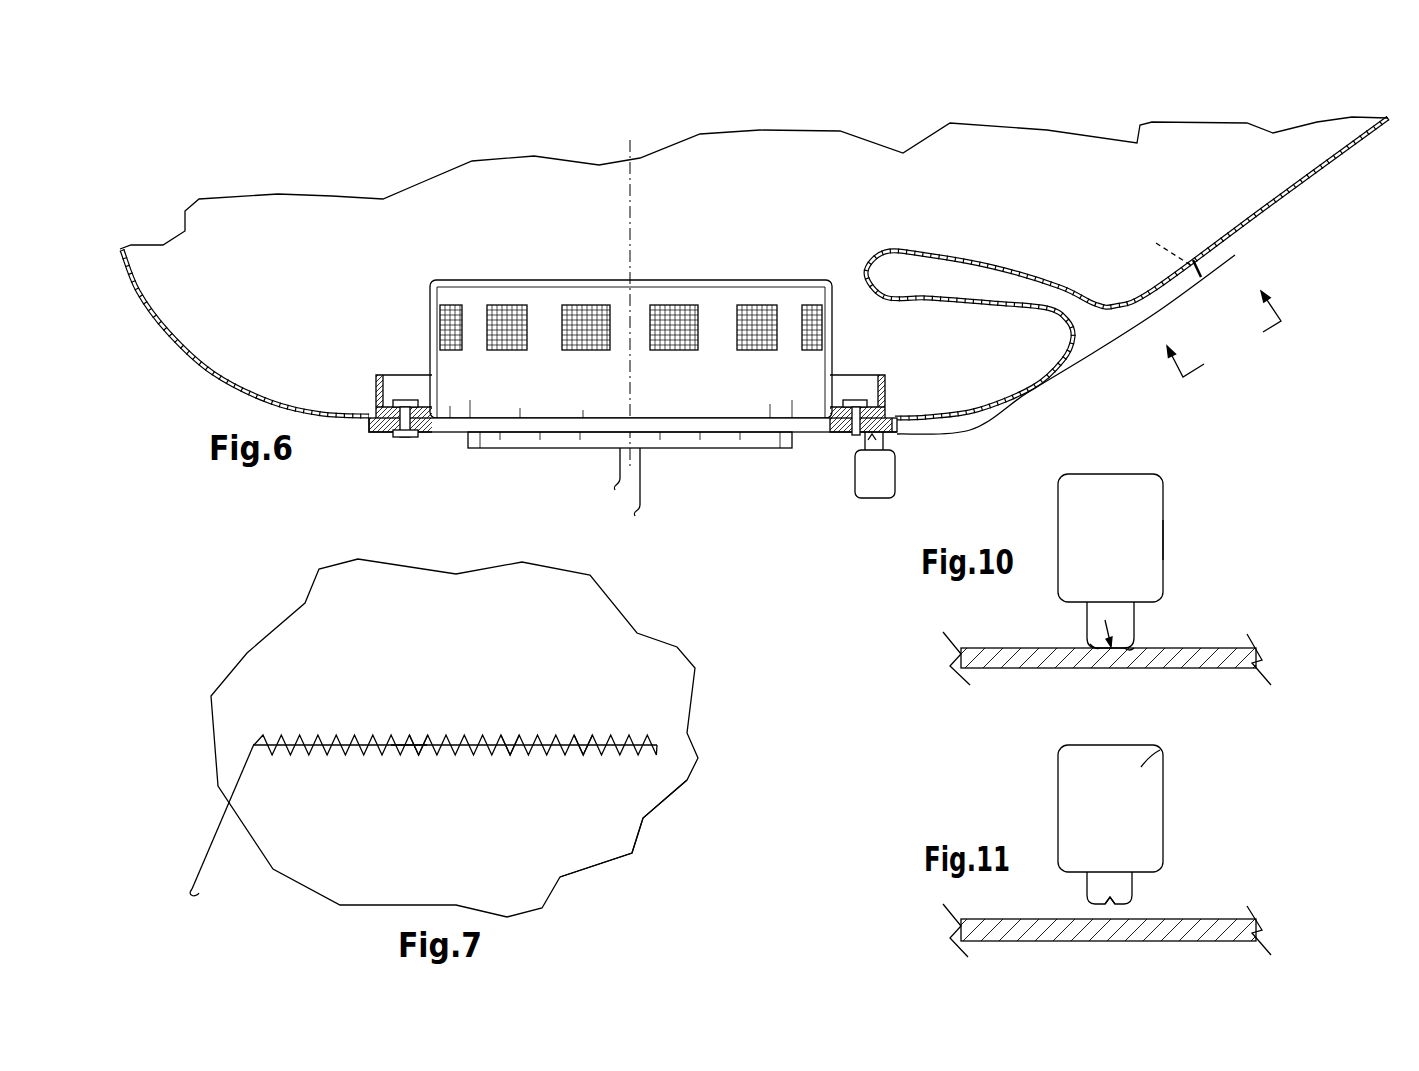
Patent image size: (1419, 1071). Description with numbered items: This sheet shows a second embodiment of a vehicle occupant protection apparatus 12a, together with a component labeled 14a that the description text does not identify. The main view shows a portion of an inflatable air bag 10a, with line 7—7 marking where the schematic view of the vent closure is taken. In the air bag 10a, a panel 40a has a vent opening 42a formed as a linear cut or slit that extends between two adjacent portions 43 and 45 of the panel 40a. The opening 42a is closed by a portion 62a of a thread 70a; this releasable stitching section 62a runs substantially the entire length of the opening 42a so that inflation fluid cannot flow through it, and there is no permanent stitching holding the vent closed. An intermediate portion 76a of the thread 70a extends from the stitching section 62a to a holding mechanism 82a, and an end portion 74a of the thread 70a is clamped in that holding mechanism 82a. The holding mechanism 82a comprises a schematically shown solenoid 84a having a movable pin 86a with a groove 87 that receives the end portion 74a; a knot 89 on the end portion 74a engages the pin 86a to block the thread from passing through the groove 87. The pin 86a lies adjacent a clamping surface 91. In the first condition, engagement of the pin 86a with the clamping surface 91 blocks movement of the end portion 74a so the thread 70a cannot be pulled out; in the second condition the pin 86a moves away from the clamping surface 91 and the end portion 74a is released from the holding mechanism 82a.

In FIG. 6, the air bag 10a is at (416, 185).
In FIG. 7, the air bag 10a is at (638, 837).
In FIG. 6, the vehicle occupant protection apparatus 12a is at (503, 143).
In FIG. 7, the vehicle occupant protection apparatus 12a is at (307, 899).
In FIG. 10, the vehicle occupant protection apparatus 12a is at (929, 638).
In FIG. 11, the vehicle occupant protection apparatus 12a is at (929, 902).
In FIG. 6, the inflator 14a is at (554, 281).
In FIG. 6, the panel 40a is at (983, 257).
In FIG. 7, the panel 40a is at (545, 843).
In FIG. 6, the vent opening 42a is at (1153, 246).
In FIG. 7, the vent opening 42a is at (364, 740).
In FIG. 7, the adjacent portion of the panel 43 is at (420, 728).
In FIG. 7, the adjacent portion of the panel 45 is at (406, 762).
In FIG. 6, the releasable stitching section 62a is at (1197, 266).
In FIG. 7, the releasable stitching section 62a is at (577, 735).
In FIG. 6, the thread 70a is at (1043, 396).
In FIG. 7, the thread 70a is at (203, 860).
In FIG. 10, the thread 70a is at (1114, 627).
In FIG. 6, the end portion of the thread 74a is at (897, 433).
In FIG. 10, the end portion of the thread 74a is at (1090, 644).
In FIG. 7, the intermediate portion of the thread 76a is at (192, 889).
In FIG. 6, the holding mechanism 82a is at (853, 472).
In FIG. 10, the holding mechanism 82a is at (1178, 507).
In FIG. 11, the holding mechanism 82a is at (1163, 820).
In FIG. 10, the solenoid 84a is at (1163, 536).
In FIG. 11, the solenoid 84a is at (1141, 767).
In FIG. 10, the pin 86a is at (1119, 602).
In FIG. 11, the pin 86a is at (1097, 883).
In FIG. 11, the groove 87 is at (1110, 899).
In FIG. 10, the knot 89 is at (1131, 648).
In FIG. 10, the clamping surface 91 is at (1000, 646).
In FIG. 11, the clamping surface 91 is at (1208, 918).
In FIG. 6, the line 7— 7 is at (1217, 321).